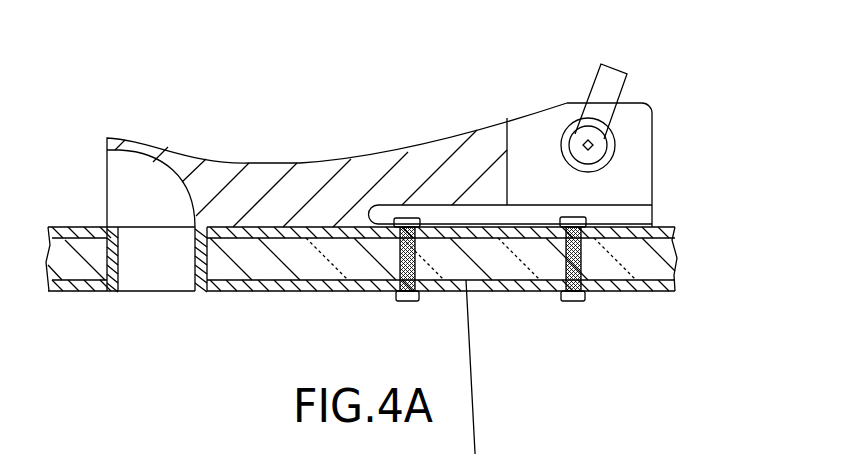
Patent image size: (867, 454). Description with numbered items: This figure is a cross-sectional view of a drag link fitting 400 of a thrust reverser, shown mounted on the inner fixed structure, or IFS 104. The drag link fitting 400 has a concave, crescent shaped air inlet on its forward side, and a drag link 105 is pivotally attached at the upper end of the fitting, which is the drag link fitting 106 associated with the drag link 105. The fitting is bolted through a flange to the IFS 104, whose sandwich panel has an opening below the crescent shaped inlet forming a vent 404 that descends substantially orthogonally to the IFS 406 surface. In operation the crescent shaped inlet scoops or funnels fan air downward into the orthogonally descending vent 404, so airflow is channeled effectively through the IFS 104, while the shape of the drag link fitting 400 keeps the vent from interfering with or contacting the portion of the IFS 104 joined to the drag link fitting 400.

The IFS 104 is at (648, 292).
The drag link 105 is at (628, 76).
The drag link fitting 106 is at (662, 114).
The drag link fitting 400 is at (536, 135).
The vent 404 is at (173, 263).
The IFS surface 406 is at (365, 289).